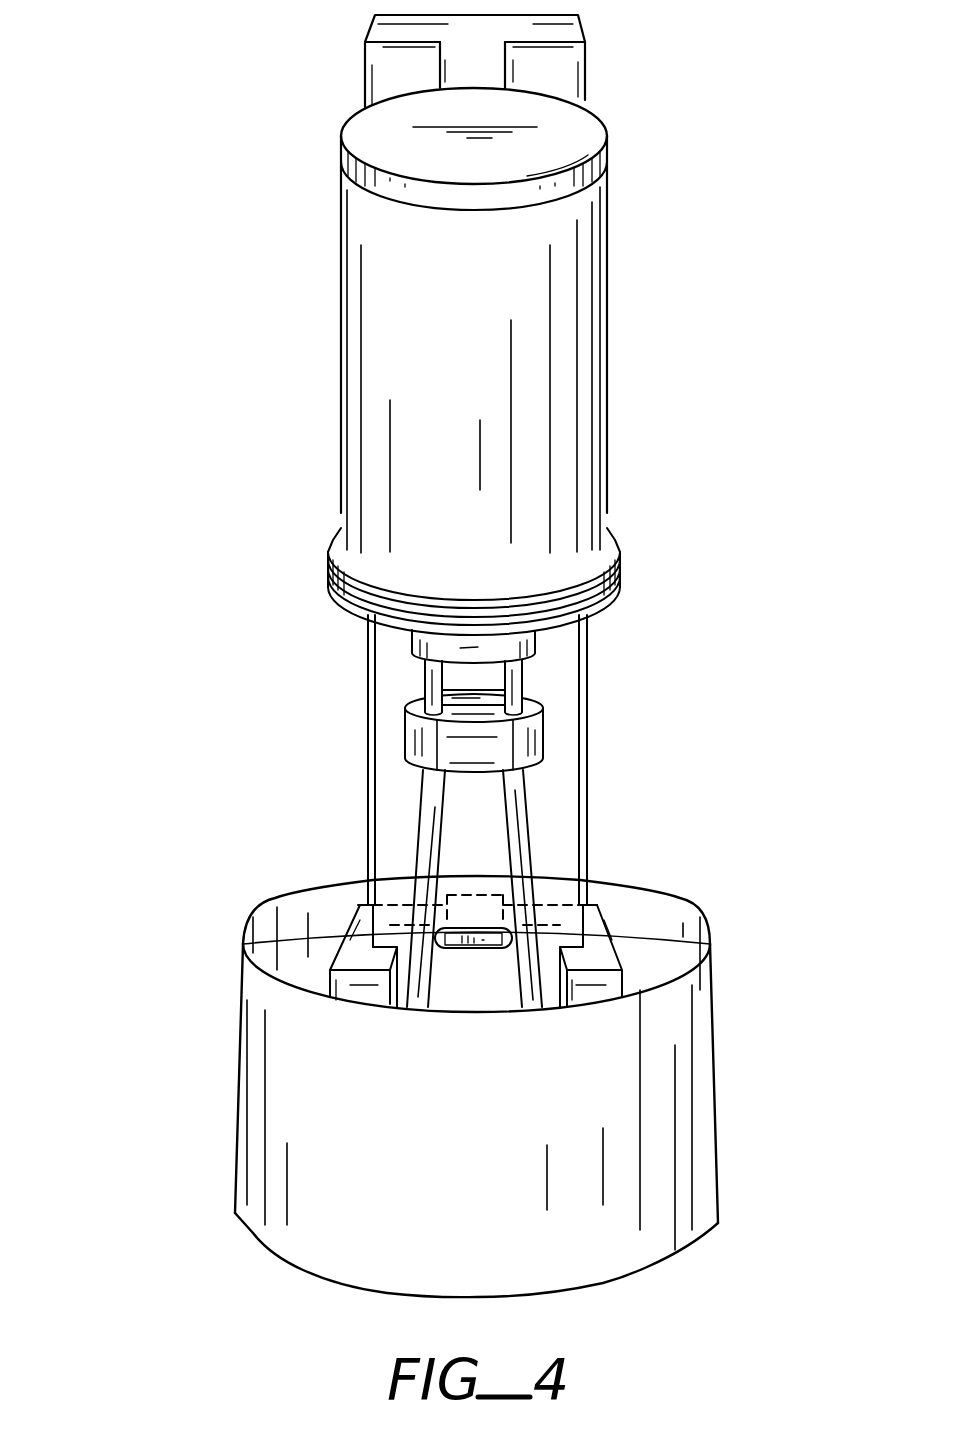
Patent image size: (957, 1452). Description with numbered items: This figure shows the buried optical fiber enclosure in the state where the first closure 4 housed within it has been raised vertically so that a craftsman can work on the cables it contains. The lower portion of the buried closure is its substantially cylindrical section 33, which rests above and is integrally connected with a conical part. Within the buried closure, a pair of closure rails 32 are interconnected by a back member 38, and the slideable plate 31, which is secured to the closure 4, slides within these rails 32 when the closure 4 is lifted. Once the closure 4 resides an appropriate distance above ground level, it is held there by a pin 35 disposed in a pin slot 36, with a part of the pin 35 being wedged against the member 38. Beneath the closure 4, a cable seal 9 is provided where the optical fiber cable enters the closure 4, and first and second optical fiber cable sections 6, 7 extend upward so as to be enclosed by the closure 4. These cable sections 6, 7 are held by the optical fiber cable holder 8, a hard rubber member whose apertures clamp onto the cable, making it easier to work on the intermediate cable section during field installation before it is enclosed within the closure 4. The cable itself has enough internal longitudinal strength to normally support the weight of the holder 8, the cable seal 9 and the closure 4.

The optical fiber closure 4 is at (617, 200).
The slideable plate 31 is at (378, 77).
The cable seal 9 is at (412, 643).
The optical fiber cable holder 8 is at (528, 696).
The second optical fiber cable section 7 is at (432, 817).
The first optical fiber cable section 6 is at (515, 812).
The back member 38 is at (405, 903).
The substantially cylindrical section 33 is at (668, 893).
The pin slot 36 is at (372, 928).
The pin 35 is at (583, 928).
The closure rails 32 is at (363, 983).